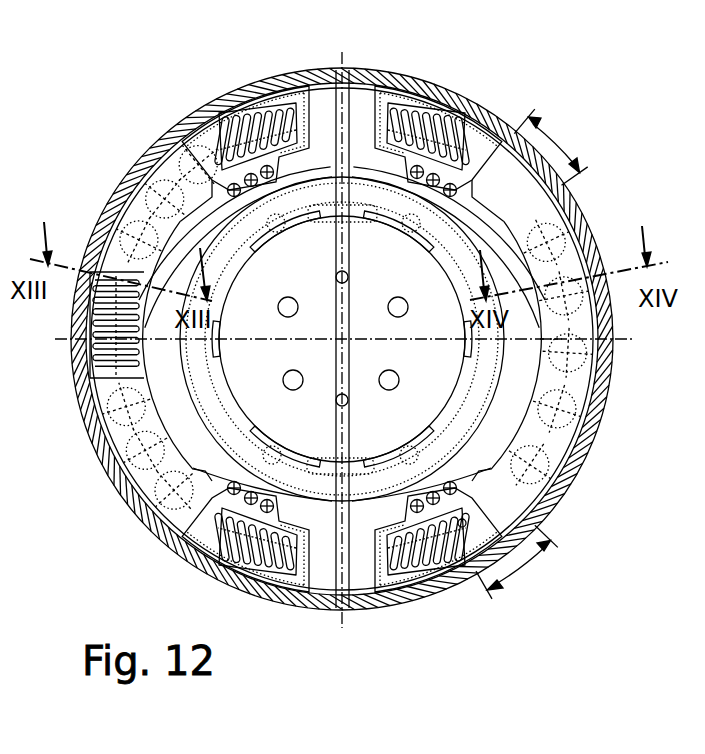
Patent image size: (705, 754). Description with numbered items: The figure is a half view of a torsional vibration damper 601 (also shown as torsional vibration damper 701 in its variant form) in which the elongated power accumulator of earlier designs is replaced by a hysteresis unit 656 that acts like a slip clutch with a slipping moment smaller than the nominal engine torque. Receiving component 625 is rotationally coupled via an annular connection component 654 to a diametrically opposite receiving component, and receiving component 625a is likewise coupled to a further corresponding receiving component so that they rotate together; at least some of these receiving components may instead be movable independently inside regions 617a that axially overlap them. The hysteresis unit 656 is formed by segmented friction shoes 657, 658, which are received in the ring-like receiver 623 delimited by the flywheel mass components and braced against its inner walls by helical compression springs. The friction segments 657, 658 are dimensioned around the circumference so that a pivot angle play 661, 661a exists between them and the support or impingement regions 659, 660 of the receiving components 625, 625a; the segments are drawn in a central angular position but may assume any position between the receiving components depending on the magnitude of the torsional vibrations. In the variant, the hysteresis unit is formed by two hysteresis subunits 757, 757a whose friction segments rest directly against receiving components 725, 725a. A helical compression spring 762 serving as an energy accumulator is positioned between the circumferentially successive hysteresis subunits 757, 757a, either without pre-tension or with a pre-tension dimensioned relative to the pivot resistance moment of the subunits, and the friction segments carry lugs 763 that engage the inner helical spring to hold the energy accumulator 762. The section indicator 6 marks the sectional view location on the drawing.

The torsional vibration damper 601 is at (434, 70).
The torsional vibration damper 701 is at (227, 76).
The friction shoe 658 is at (128, 203).
The region 617a is at (582, 392).
The annular connection component 654 is at (515, 277).
The ring-like receiver 623 is at (500, 505).
The helical compression spring 762 is at (100, 368).
The lug 763 is at (112, 290).
The hysteresis subunit 757 is at (160, 167).
The hysteresis subunit 757a is at (143, 490).
The friction shoe 657 is at (588, 328).
The hysteresis unit 656 is at (580, 390).
The receiving component 625 is at (490, 140).
The receiving component 725a is at (225, 125).
The receiving component 625a is at (455, 558).
The receiving component 725 is at (195, 537).
The support or impingement region 659 is at (480, 168).
The support or impingement region 660 is at (463, 540).
The pivot angle play 661 is at (562, 130).
The pivot angle play 661a is at (530, 570).
The section indicator 6 is at (586, 263).